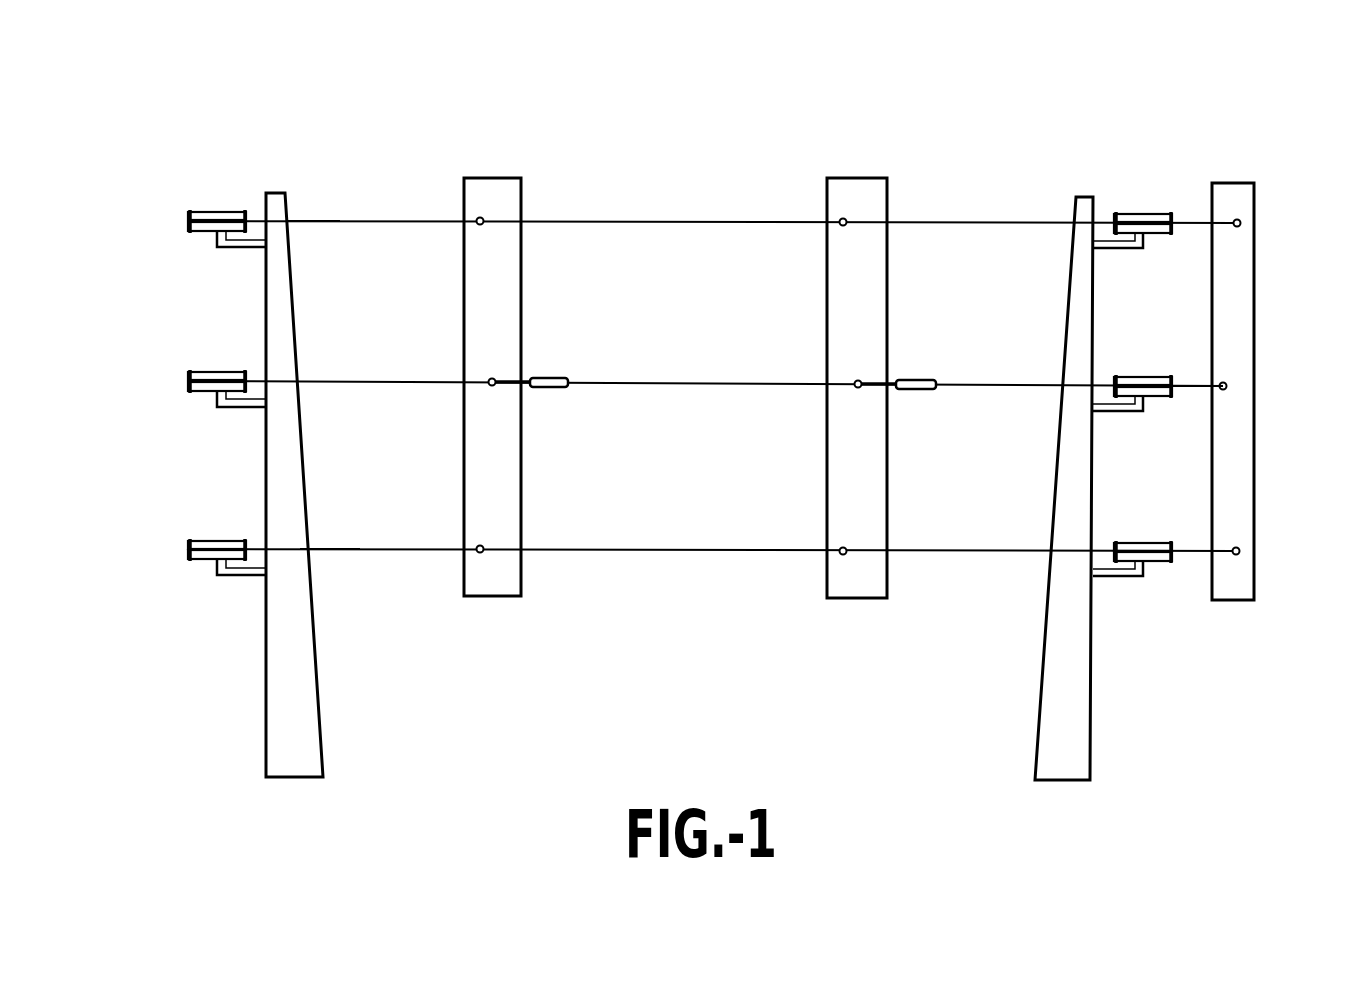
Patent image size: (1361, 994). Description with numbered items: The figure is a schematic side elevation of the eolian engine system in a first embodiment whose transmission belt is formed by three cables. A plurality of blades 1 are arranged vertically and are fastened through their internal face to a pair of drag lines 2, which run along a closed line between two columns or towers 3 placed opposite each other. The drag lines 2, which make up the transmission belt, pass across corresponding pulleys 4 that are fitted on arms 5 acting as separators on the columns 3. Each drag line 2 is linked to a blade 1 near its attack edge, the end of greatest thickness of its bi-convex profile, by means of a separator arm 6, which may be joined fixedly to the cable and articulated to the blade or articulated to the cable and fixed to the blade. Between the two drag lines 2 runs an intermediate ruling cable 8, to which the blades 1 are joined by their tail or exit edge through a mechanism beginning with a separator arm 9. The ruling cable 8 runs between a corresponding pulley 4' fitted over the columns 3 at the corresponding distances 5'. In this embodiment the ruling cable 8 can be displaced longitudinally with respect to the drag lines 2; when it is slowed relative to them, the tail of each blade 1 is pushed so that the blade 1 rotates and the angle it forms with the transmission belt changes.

The blade 1 is at (484, 193).
The drag line 2 is at (982, 218).
The column 3 is at (280, 196).
The pulley 4 is at (728, 405).
The pulley 4' is at (768, 352).
The arm 5 is at (625, 436).
The distance 5' is at (626, 422).
The separator arm 6 is at (297, 212).
The ruling cable 8 is at (630, 378).
The separator arm 9 is at (1185, 387).